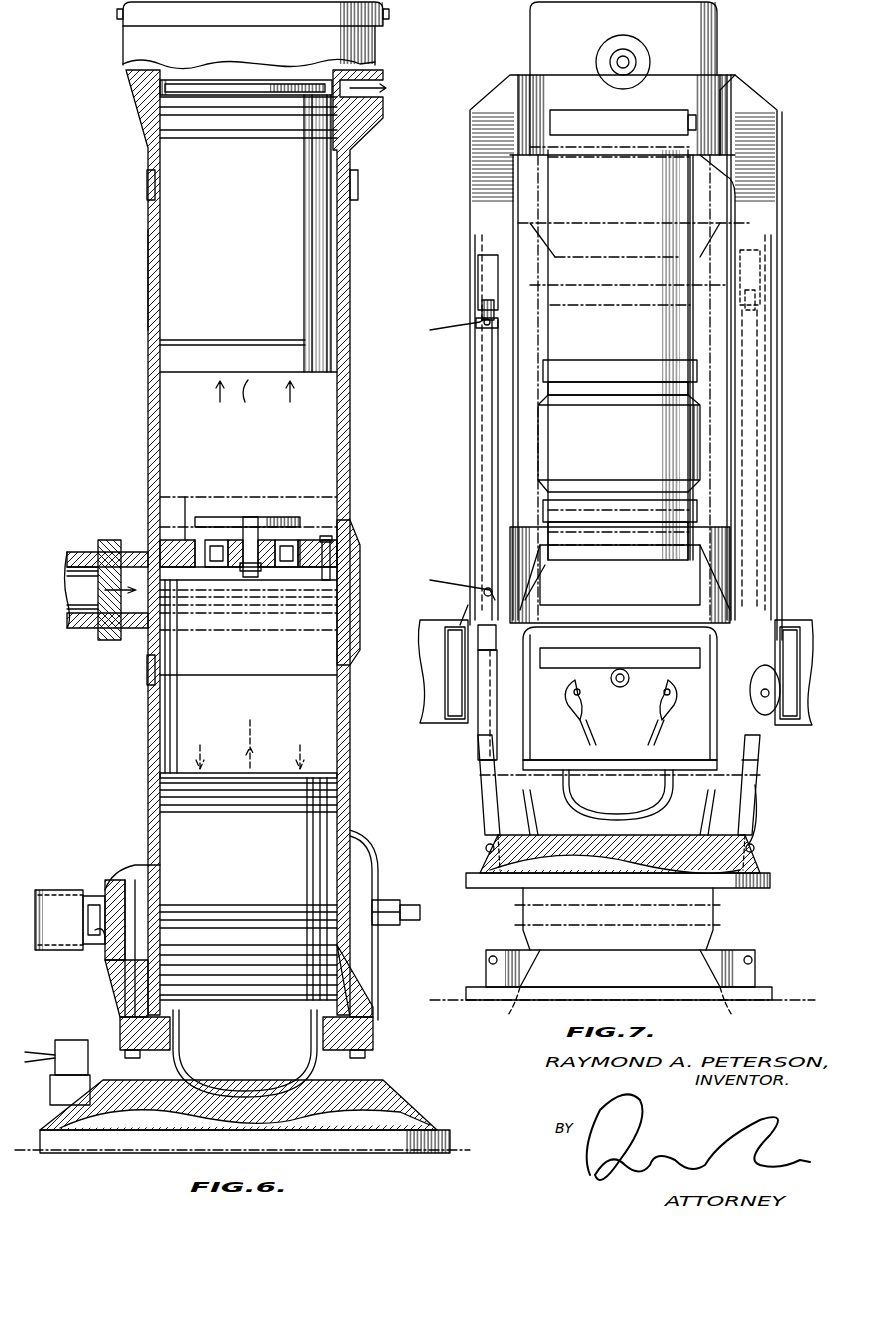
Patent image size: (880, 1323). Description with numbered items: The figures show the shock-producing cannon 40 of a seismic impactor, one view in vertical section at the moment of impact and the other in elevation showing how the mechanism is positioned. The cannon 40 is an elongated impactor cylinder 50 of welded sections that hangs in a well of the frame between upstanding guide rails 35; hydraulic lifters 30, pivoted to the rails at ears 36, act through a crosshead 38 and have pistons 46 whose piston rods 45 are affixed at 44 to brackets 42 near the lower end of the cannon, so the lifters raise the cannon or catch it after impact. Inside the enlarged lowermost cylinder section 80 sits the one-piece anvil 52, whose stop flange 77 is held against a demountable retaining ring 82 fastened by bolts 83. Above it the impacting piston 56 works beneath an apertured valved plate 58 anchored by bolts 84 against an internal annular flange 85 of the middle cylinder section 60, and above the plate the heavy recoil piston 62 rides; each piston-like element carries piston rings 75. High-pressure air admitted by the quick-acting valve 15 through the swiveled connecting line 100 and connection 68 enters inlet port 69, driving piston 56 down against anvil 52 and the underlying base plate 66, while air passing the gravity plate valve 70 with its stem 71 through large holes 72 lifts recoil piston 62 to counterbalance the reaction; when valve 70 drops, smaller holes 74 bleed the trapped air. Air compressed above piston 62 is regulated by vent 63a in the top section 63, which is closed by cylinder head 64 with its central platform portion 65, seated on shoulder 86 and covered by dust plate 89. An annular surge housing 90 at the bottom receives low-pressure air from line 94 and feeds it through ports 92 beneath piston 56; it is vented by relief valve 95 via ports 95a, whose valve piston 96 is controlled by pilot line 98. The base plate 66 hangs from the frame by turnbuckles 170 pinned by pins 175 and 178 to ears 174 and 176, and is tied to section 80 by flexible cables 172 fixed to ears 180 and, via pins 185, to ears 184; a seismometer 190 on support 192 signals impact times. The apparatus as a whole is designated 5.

In FIG. 7, the apparatus 5 is at (803, 620).
In FIG. 6, the quick-acting valve 15 is at (205, 130).
In FIG. 7, the hydraulic lifters 30 is at (474, 387).
In FIG. 7, the guide rails 35 is at (485, 156).
In FIG. 7, the ears and pivots 36 is at (478, 293).
In FIG. 7, the crosshead 38 is at (715, 85).
In FIG. 6, the cannon 40 is at (135, 194).
In FIG. 7, the cannon 40 is at (523, 64).
In FIG. 7, the brackets 42 is at (530, 590).
In FIG. 7, the piston rod attachment 44 is at (480, 628).
In FIG. 7, the piston rods 45 is at (478, 454).
In FIG. 7, the pistons 46 is at (480, 345).
In FIG. 6, the impactor cylinder 50 is at (147, 270).
In FIG. 7, the impactor cylinder 50 is at (560, 198).
In FIG. 6, the anvil member 52 is at (275, 1048).
In FIG. 7, the anvil member 52 is at (635, 803).
In FIG. 6, the impacting piston 56 is at (265, 853).
In FIG. 6, the valved plate 58 is at (180, 530).
In FIG. 6, the middle cylinder section 60 is at (357, 566).
In FIG. 7, the middle cylinder section 60 is at (700, 448).
In FIG. 6, the recoil piston 62 is at (265, 212).
In FIG. 6, the top cylinder section 63 is at (130, 42).
In FIG. 7, the top cylinder section 63 is at (545, 22).
In FIG. 6, the atmospheric vent 63a is at (383, 88).
In FIG. 6, the cylinder head 64 is at (222, 80).
In FIG. 6, the central platform portion 65 is at (262, 82).
In FIG. 6, the base plate 66 is at (395, 1098).
In FIG. 7, the base plate 66 is at (772, 881).
In FIG. 6, the high-pressure connection 68 is at (100, 552).
In FIG. 6, the inlet port 69 is at (148, 585).
In FIG. 6, the plate valve 70 is at (268, 517).
In FIG. 6, the stem 71 is at (243, 517).
In FIG. 6, the holes 72 is at (285, 545).
In FIG. 6, the smaller holes 74 is at (198, 540).
In FIG. 6, the piston rings 75 is at (195, 330).
In FIG. 6, the stop flange 77 is at (190, 1010).
In FIG. 6, the lowermost cylinder section 80 is at (360, 975).
In FIG. 7, the lowermost cylinder section 80 is at (588, 680).
In FIG. 6, the retaining ring 82 is at (373, 1040).
In FIG. 7, the retaining ring 82 is at (575, 775).
In FIG. 6, the bolts 83 is at (390, 1058).
In FIG. 6, the bolts 84 is at (331, 560).
In FIG. 6, the internal annular flange 85 is at (318, 576).
In FIG. 6, the annular shoulder 86 is at (125, 66).
In FIG. 6, the dust plate 89 is at (295, 15).
In FIG. 6, the annular housing 90 is at (352, 850).
In FIG. 7, the annular housing 90 is at (530, 664).
In FIG. 6, the ports 92 is at (355, 957).
In FIG. 6, the low pressure air line 94 is at (405, 905).
In FIG. 7, the low pressure air line 94 is at (618, 686).
In FIG. 6, the relief valve 95 is at (84, 896).
In FIG. 6, the ports 95a is at (98, 890).
In FIG. 6, the valve piston 96 is at (78, 915).
In FIG. 6, the pilot pressure line 98 is at (43, 890).
In FIG. 6, the swiveled connecting line 100 is at (68, 630).
In FIG. 7, the turnbuckles 170 is at (482, 800).
In FIG. 7, the flexible cables 172 is at (712, 735).
In FIG. 7, the ears 174 is at (486, 838).
In FIG. 7, the removable pin 175 is at (495, 848).
In FIG. 7, the ears 176 is at (760, 720).
In FIG. 7, the removable pin 178 is at (767, 690).
In FIG. 7, the ears 180 is at (625, 1006).
In FIG. 7, the ears 184 is at (580, 700).
In FIG. 7, the pins 185 is at (576, 690).
In FIG. 6, the seismometer 190 is at (70, 1040).
In FIG. 6, the support 192 is at (65, 1085).